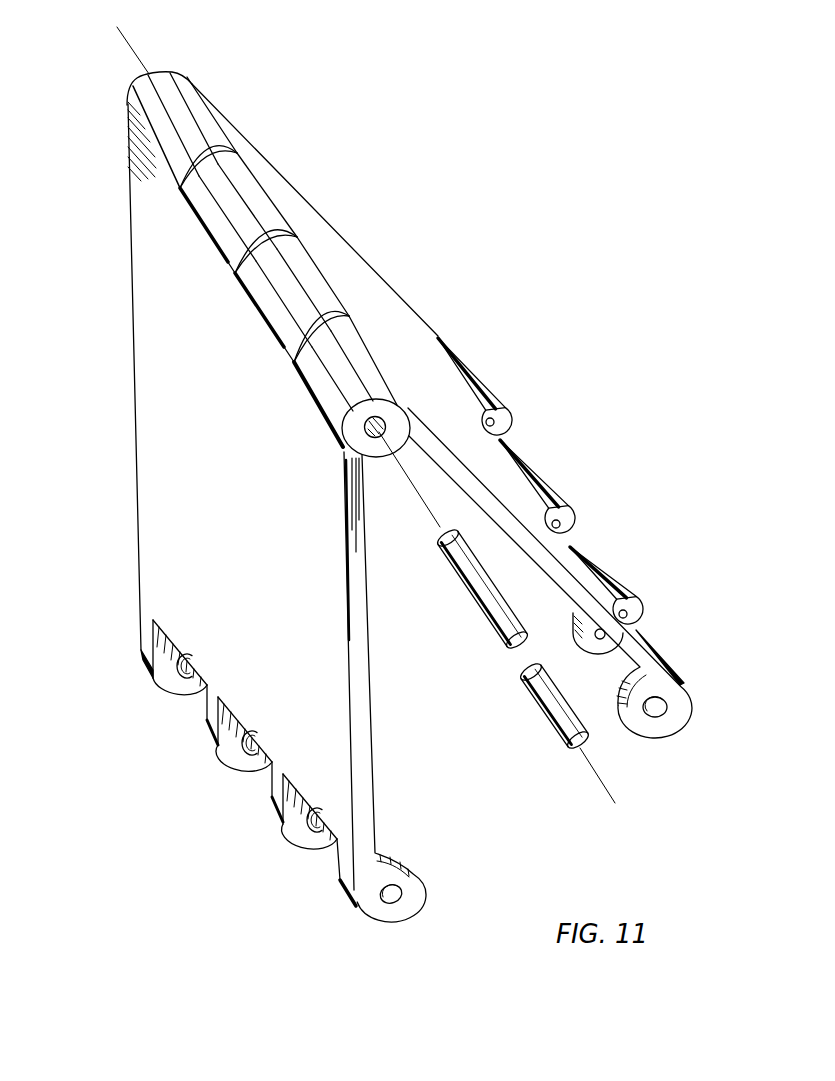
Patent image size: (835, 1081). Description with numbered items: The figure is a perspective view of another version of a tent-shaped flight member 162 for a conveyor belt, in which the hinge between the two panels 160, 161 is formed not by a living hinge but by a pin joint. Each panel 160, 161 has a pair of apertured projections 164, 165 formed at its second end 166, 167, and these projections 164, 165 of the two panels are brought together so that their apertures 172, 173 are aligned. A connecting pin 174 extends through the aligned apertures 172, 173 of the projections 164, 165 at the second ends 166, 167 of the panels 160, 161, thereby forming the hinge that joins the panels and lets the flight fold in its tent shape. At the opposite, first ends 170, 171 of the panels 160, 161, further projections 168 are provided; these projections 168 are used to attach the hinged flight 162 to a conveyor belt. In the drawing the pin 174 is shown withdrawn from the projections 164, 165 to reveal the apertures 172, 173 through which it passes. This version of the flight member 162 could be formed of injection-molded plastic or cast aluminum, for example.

The panel 160 is at (370, 282).
The panel 161 is at (141, 357).
The tent-shaped flight member 162 is at (362, 192).
The apertured projection 164 is at (230, 190).
The apertured projection 165 is at (197, 122).
The second end 166 is at (408, 436).
The second end 167 is at (143, 82).
The projection 168 is at (678, 710).
The first end 170 is at (477, 405).
The first end 171 is at (266, 758).
The aperture 172 is at (346, 454).
The aperture 173 is at (148, 73).
The connecting pin 174 is at (487, 628).